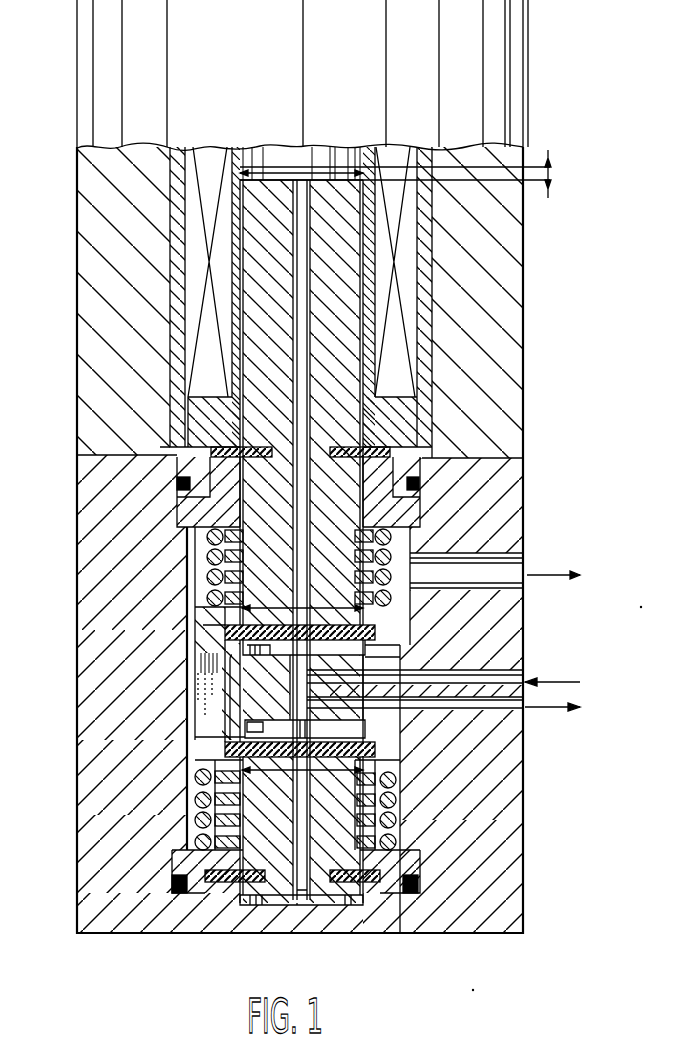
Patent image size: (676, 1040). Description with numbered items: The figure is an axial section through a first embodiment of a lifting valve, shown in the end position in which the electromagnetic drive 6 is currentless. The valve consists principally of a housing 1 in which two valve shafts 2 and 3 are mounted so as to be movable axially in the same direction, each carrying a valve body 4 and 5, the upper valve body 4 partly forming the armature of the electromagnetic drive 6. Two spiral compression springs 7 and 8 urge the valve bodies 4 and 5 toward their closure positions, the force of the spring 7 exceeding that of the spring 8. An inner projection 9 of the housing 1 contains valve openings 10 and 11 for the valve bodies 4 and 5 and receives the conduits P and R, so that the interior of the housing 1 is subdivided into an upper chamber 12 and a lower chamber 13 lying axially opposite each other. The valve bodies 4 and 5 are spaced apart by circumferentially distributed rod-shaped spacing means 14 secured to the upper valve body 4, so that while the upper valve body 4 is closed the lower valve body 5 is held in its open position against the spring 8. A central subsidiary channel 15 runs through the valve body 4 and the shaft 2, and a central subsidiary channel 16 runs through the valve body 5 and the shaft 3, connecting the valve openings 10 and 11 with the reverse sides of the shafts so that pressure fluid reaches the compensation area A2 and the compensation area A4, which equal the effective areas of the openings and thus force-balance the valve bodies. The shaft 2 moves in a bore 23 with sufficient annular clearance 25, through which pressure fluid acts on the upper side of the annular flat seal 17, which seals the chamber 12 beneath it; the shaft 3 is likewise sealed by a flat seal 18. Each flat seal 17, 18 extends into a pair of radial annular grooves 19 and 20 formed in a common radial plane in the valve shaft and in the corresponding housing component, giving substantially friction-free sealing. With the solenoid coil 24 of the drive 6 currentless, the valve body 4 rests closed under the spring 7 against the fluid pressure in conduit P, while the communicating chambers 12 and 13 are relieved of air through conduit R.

The housing 1 is at (100, 487).
The valve shaft 2 is at (245, 268).
The valve shaft 3 is at (250, 903).
The valve body 4 is at (215, 620).
The valve body 5 is at (232, 752).
The electromagnetic drive 6 is at (120, 127).
The spiral compression spring 7 is at (215, 570).
The spiral compression spring 8 is at (200, 830).
The inner projection 9 is at (375, 660).
The valve opening 10 is at (252, 650).
The valve opening 11 is at (360, 722).
The upper chamber 12 is at (410, 545).
The lower chamber 13 is at (397, 805).
The spacing means 14 is at (200, 690).
The central subsidiary channel 15 is at (310, 283).
The central subsidiary channel 16 is at (302, 905).
The annular flat seal 17 is at (402, 450).
The annular flat seal 18 is at (362, 895).
The radial annular groove 19 is at (352, 447).
The radial annular groove 20 is at (372, 453).
The bore 23 is at (293, 170).
The solenoid coil 24 is at (395, 152).
The annular clearance 25 is at (240, 325).
The compensation area A2 is at (323, 173).
The compensation area A4 is at (290, 905).